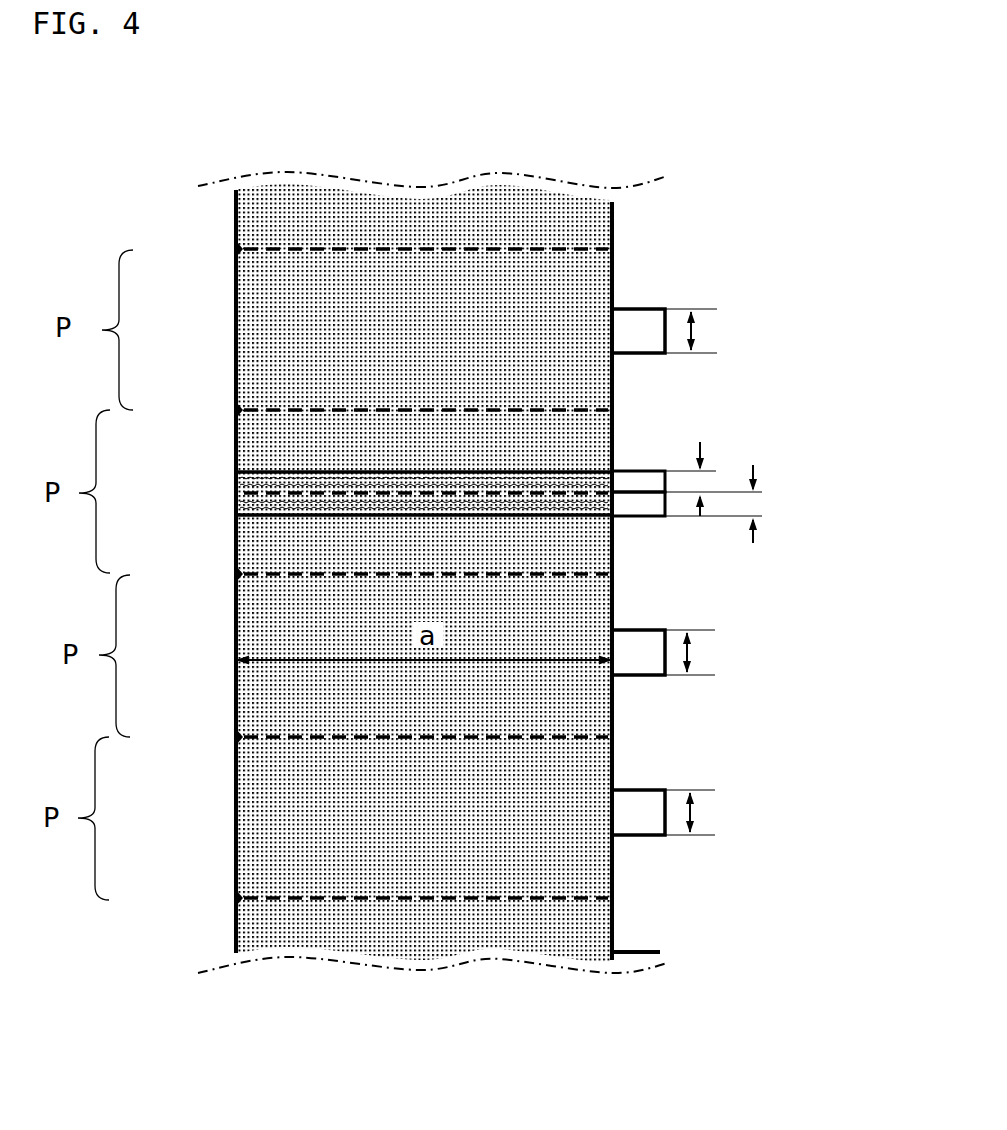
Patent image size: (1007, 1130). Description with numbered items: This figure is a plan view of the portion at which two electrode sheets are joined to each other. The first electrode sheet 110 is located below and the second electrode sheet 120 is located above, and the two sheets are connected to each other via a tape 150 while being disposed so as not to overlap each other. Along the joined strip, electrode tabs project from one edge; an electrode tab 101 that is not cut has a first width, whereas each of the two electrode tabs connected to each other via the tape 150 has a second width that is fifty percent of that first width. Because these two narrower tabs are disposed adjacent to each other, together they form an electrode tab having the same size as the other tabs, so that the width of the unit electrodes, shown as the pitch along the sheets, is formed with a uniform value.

The wiring 101 is at (628, 313).
The first electrode sheet 110 is at (852, 487).
The second electrode sheet 120 is at (830, 193).
The tape 150 is at (236, 513).